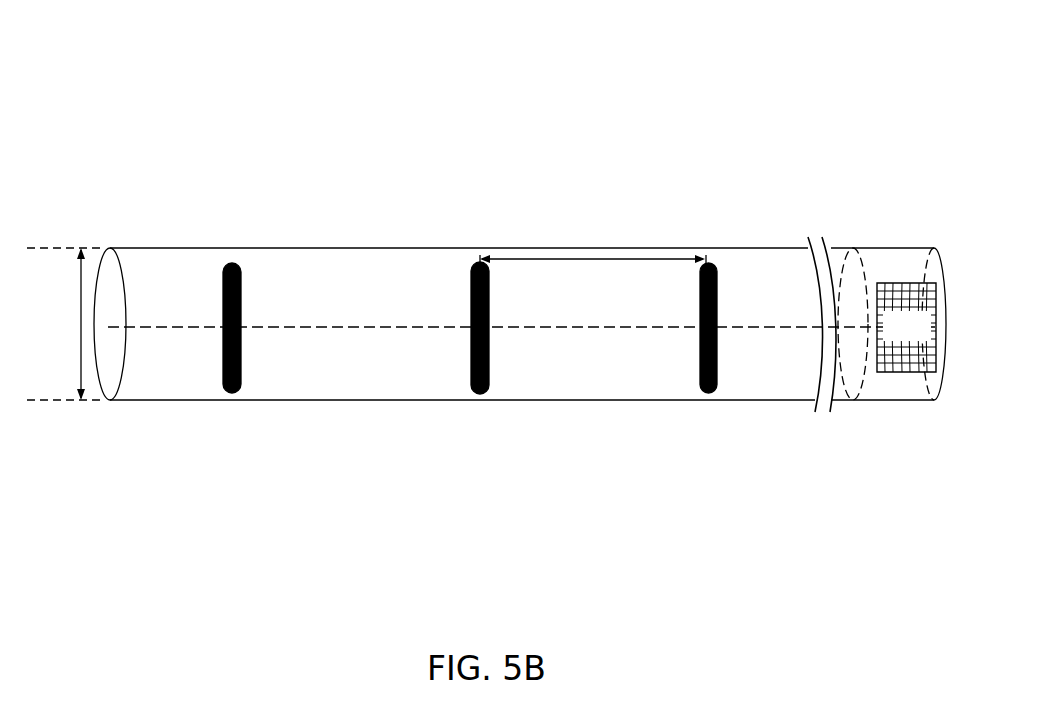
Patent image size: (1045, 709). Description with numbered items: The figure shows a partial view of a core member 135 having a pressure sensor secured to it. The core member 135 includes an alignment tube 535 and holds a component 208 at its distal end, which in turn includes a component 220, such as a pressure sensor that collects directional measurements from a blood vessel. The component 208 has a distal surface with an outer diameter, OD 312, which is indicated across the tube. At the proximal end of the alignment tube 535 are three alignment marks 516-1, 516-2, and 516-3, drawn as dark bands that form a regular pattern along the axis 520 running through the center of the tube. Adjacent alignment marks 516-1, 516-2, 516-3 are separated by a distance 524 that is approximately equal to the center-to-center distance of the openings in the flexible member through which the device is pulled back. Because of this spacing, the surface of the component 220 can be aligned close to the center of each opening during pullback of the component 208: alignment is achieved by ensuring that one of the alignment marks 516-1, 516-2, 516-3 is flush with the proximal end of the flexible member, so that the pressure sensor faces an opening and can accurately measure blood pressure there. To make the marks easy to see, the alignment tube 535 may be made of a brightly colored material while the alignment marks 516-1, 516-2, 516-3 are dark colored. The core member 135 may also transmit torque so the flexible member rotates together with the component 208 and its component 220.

The core member 135 is at (343, 88).
The OD 312 is at (80, 332).
The alignment tube 535 is at (465, 266).
The axis 520 is at (337, 329).
The alignment mark 516-1 is at (206, 328).
The alignment mark 516-2 is at (471, 335).
The alignment mark 516-3 is at (716, 333).
The distance 524 is at (575, 261).
The component 208 is at (897, 260).
The component 220 is at (906, 327).